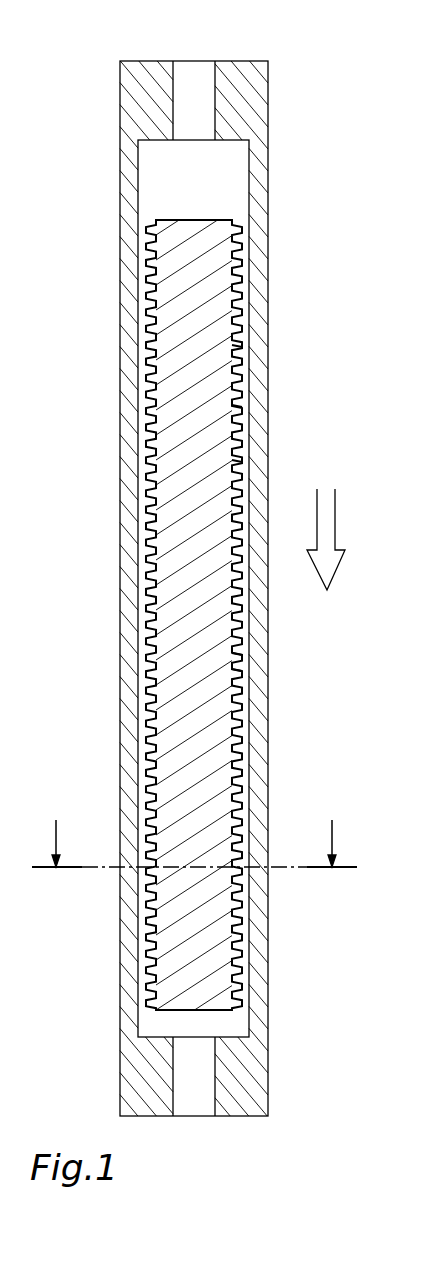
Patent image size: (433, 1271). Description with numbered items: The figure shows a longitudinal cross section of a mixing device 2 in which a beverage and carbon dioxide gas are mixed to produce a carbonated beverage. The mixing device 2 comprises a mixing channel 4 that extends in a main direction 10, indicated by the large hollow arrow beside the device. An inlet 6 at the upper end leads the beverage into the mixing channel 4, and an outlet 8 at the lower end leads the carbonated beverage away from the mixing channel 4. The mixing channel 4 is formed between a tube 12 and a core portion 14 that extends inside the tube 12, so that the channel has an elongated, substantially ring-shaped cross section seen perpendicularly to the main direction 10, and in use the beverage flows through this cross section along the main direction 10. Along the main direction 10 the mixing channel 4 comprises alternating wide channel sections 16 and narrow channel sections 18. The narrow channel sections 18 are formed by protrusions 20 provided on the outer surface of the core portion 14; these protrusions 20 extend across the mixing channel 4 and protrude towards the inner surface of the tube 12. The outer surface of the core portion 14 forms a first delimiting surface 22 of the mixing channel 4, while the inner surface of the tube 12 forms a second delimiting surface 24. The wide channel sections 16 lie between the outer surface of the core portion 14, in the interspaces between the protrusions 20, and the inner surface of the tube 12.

The mixing device 2 is at (372, 74).
The mixing channel 4 is at (243, 221).
The inlet 6 is at (197, 72).
The outlet 8 is at (193, 1102).
The main direction 10 is at (324, 530).
The tube 12 is at (256, 283).
The core portion 14 is at (217, 745).
The wide channel section 16 is at (237, 352).
The narrow channel section 18 is at (237, 407).
The protrusion 20 is at (237, 462).
The first delimiting surface 22 is at (248, 652).
The second delimiting surface 24 is at (243, 671).